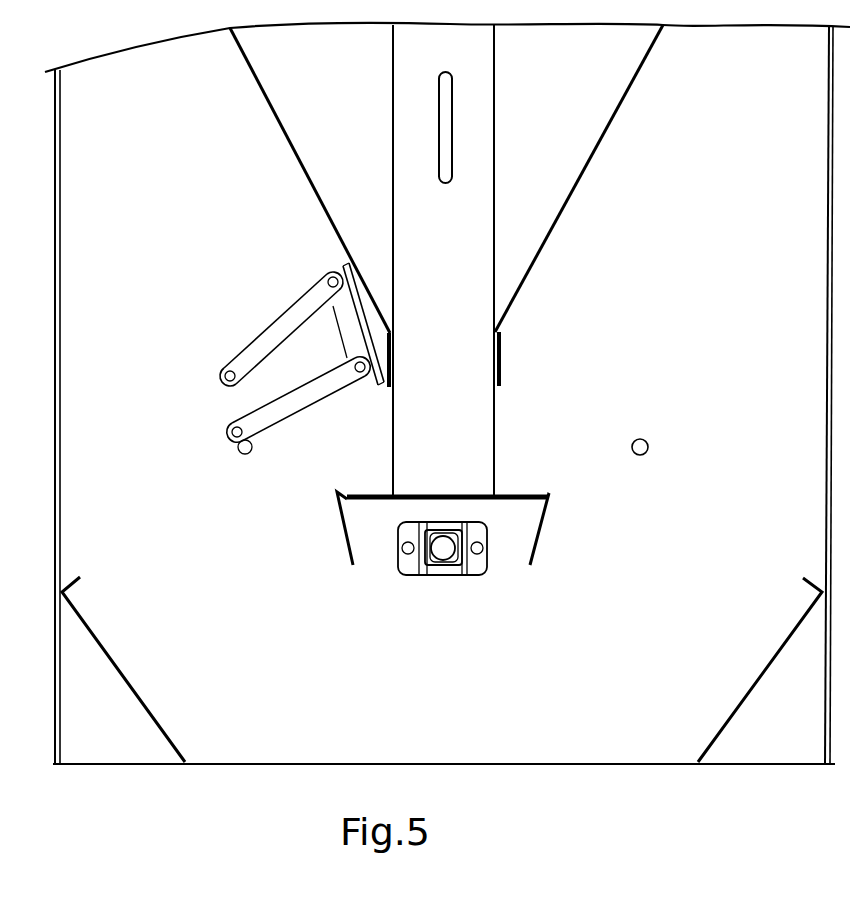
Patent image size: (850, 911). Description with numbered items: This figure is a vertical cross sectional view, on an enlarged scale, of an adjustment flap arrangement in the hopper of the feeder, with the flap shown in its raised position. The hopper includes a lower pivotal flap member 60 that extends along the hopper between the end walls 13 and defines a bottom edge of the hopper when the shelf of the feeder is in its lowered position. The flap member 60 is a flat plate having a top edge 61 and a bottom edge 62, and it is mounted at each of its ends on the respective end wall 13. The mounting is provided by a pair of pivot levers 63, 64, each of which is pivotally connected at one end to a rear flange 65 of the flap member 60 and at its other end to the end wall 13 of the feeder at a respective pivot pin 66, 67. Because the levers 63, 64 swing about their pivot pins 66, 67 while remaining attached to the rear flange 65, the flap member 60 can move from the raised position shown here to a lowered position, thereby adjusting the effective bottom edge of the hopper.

The end wall 13 is at (665, 383).
The lower pivotal flap member 60 is at (299, 403).
The top edge 61 is at (347, 256).
The bottom edge 62 is at (385, 380).
The pivot lever 63 is at (240, 397).
The pivot lever 64 is at (278, 461).
The rear flange 65 is at (353, 343).
The pivot pin 66 is at (222, 381).
The pivot pin 67 is at (232, 440).